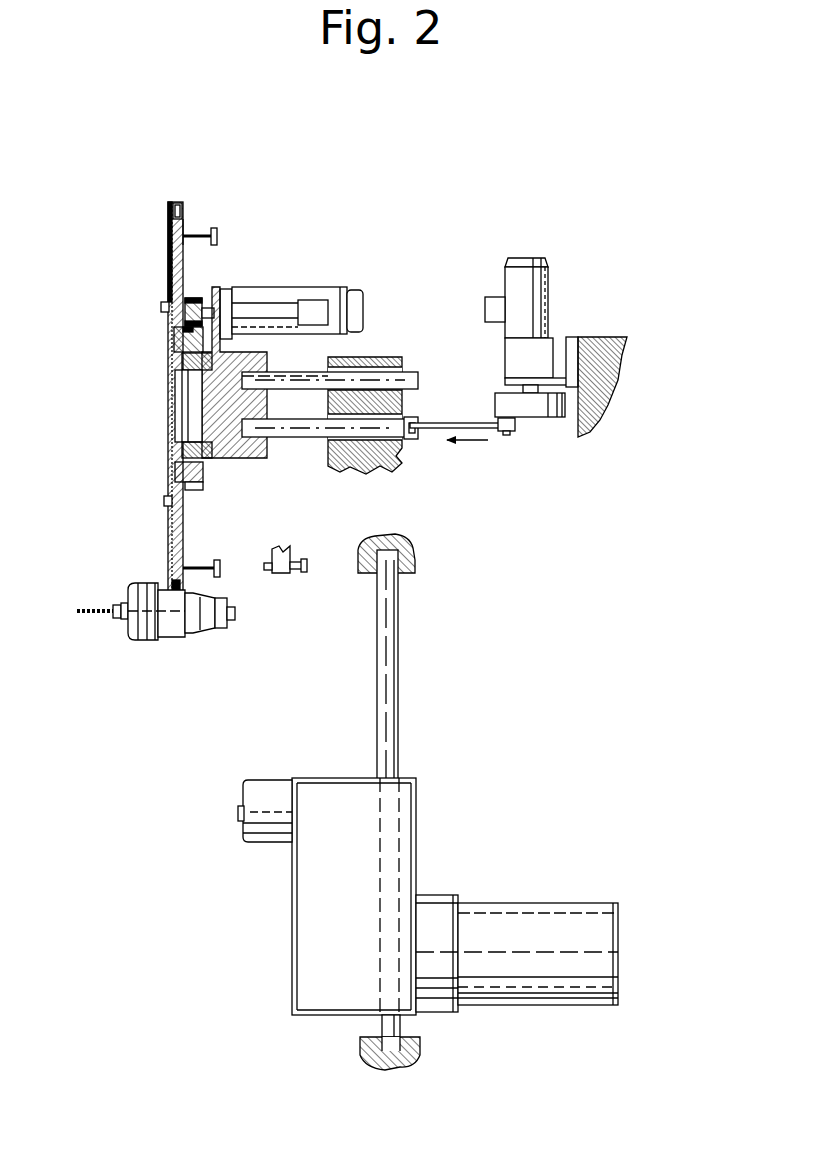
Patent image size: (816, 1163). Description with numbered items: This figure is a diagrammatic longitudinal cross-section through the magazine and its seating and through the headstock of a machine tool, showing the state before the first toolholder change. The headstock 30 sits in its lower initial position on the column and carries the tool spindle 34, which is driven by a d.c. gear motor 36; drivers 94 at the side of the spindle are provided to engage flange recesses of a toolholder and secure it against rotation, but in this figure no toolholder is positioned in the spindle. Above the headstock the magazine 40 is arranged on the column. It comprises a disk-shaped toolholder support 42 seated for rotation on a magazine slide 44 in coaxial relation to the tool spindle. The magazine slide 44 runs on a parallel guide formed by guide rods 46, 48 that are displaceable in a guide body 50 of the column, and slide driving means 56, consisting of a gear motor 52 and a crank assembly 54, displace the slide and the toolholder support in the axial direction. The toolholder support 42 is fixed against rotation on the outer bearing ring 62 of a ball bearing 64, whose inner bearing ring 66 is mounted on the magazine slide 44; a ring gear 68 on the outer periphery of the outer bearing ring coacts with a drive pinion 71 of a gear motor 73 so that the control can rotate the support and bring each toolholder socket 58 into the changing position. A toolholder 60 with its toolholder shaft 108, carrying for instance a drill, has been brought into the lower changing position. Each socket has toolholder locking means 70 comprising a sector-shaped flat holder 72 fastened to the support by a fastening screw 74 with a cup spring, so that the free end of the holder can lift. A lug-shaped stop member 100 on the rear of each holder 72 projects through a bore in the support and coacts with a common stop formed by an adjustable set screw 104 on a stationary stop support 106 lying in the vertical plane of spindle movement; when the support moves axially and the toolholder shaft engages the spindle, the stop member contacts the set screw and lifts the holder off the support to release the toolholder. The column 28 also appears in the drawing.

The column 28 is at (396, 690).
The headstock 30 is at (276, 876).
The tool spindle 34 is at (240, 835).
The d.c. gear motor 36 is at (532, 925).
The magazine 40 is at (190, 223).
The toolholder support 42 is at (175, 335).
The magazine slide 44 is at (228, 430).
The guide rod 46 is at (300, 372).
The guide rod 48 is at (300, 437).
The guide body 50 is at (395, 458).
The gear motor 52 is at (535, 302).
The crank assembly 54 is at (523, 432).
The slide driving means 56 is at (563, 326).
The toolholder socket 58 is at (184, 228).
The toolholder 60 is at (150, 640).
The outer bearing ring 62 is at (176, 470).
The ball bearing 64 is at (184, 362).
The inner bearing ring 66 is at (190, 447).
The ring gear 68 is at (198, 488).
The toolholder locking means 70 is at (163, 275).
The drive pinion 71 is at (195, 298).
The holder 72 is at (168, 250).
The gear motor 73 is at (292, 297).
The fastening screw 74 is at (163, 307).
The driver 94 is at (238, 812).
The stop member 100 is at (208, 235).
The set screw 104 is at (267, 572).
The stop support 106 is at (284, 548).
The toolholder shaft 108 is at (205, 633).